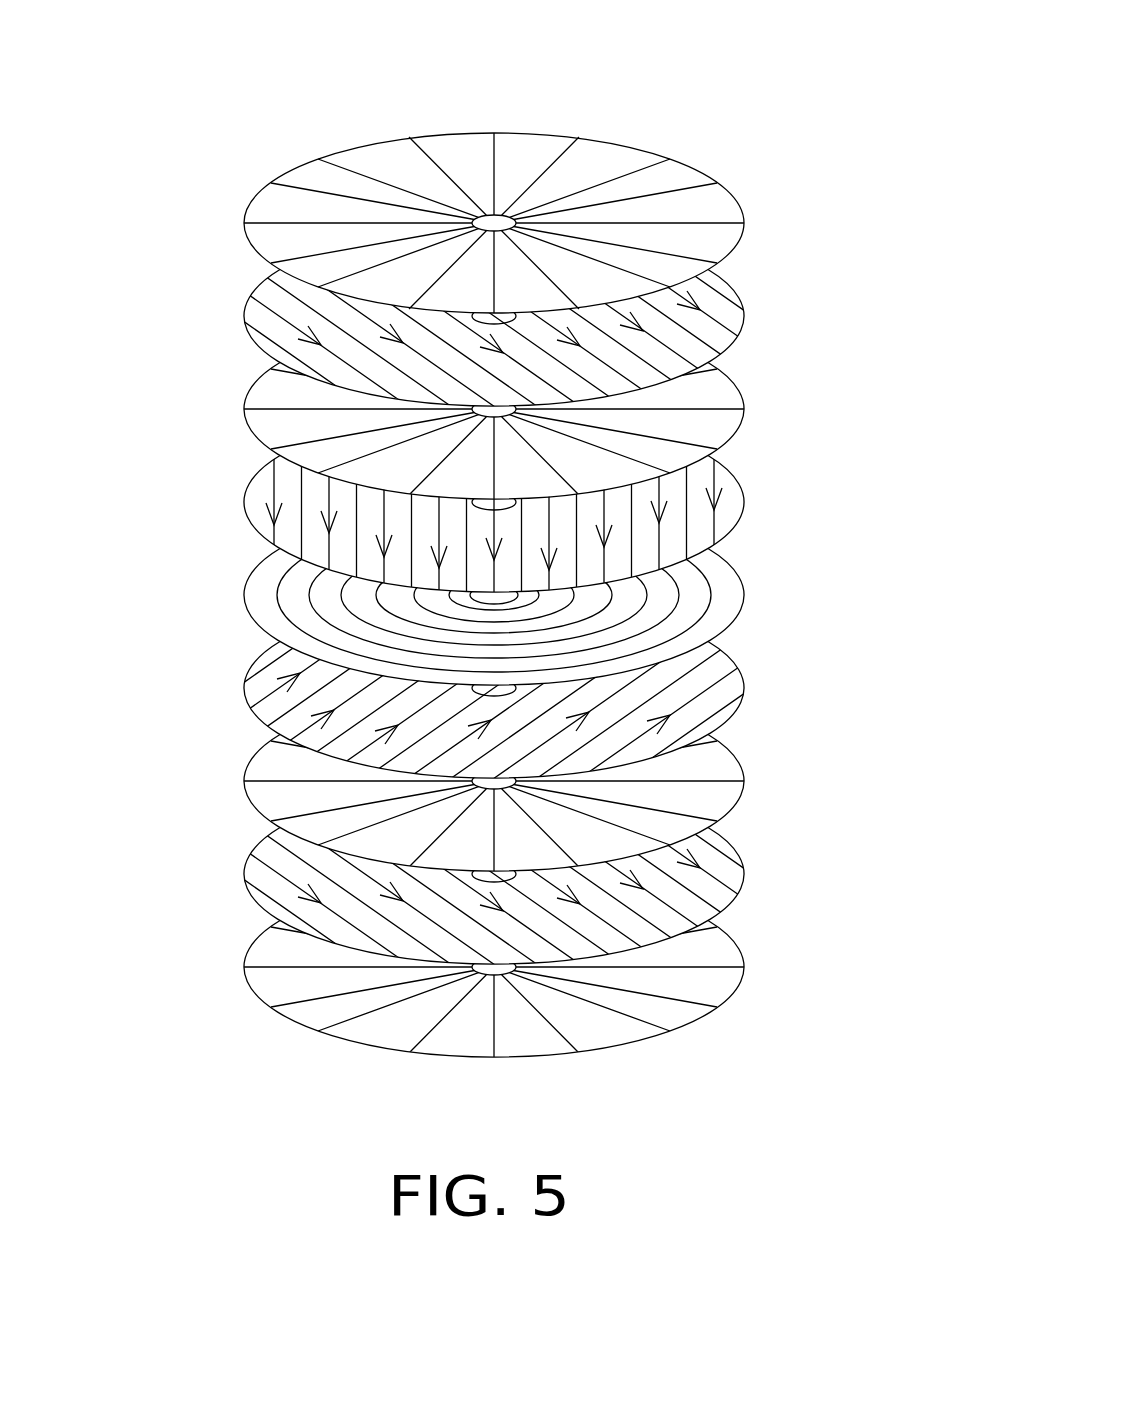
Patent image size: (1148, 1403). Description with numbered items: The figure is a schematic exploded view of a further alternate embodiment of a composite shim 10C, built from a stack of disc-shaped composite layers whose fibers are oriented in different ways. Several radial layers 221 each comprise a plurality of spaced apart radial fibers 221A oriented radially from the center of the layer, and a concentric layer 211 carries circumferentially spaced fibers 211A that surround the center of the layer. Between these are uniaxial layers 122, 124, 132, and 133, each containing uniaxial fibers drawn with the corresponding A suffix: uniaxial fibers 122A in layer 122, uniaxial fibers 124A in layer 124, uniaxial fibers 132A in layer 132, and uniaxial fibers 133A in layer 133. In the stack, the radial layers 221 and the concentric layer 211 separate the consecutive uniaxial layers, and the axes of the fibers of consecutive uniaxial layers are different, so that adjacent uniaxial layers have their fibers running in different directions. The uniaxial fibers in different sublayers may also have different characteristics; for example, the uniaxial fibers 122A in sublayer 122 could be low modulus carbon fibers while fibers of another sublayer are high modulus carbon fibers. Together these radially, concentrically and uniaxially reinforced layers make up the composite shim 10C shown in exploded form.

The composite shim 10C is at (800, 168).
The radial layer 221 is at (690, 167).
The radial fibers 221A is at (310, 220).
The uniaxial layer 122 is at (743, 310).
The uniaxial fibers 122A is at (262, 300).
The uniaxial layer 124 is at (743, 500).
The uniaxial fibers 124A is at (260, 484).
The concentric layer 211 is at (743, 593).
The circumferentially spaced fibers 211A is at (710, 590).
The uniaxial layer 133 is at (743, 703).
The uniaxial fibers 133A is at (270, 690).
The uniaxial layer 132 is at (743, 885).
The uniaxial fibers 132A is at (263, 880).